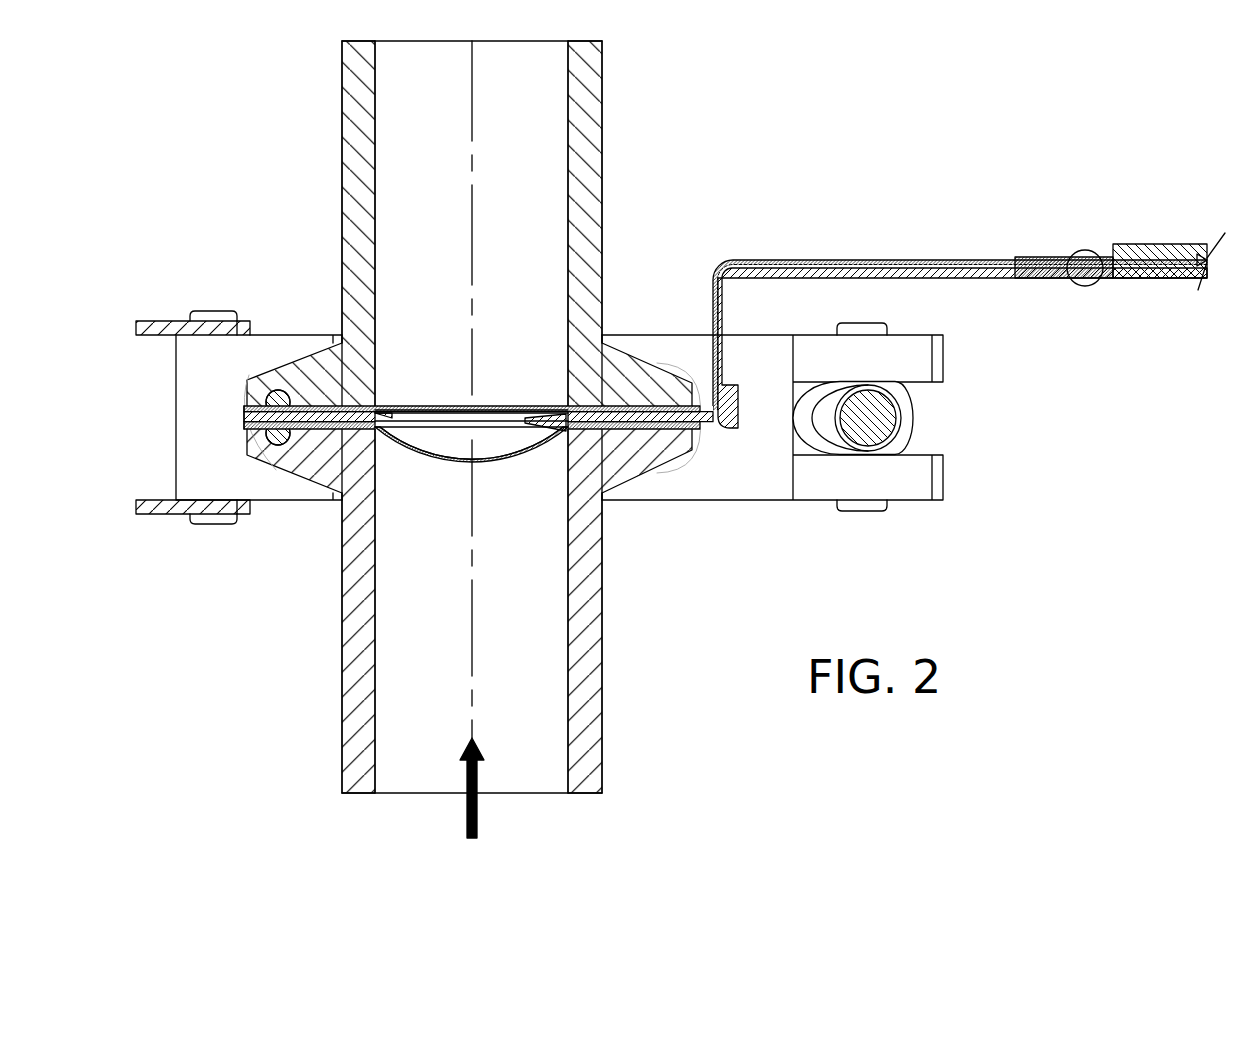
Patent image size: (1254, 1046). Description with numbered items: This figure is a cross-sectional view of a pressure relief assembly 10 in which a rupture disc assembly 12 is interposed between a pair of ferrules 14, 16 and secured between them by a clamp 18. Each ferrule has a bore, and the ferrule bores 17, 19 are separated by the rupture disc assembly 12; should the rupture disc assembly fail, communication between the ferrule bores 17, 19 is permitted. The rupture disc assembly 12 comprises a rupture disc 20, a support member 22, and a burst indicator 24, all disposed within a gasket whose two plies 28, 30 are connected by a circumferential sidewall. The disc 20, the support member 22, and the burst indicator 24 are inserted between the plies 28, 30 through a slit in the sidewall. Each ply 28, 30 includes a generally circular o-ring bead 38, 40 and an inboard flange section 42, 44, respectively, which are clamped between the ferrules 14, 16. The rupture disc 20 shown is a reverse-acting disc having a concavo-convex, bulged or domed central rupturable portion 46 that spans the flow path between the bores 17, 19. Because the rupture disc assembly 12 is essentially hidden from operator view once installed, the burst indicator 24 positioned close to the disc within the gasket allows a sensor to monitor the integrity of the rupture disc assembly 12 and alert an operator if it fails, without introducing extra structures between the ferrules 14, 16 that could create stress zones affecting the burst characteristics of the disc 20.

The pressure relief assembly 10 is at (242, 192).
The rupture disc assembly 12 is at (486, 394).
The ferrule 14 is at (593, 700).
The ferrule 16 is at (602, 130).
The ferrule bore 17 is at (496, 707).
The clamp 18 is at (667, 500).
The ferrule bore 19 is at (526, 99).
The rupture disc 20 is at (376, 433).
The support member 22 is at (570, 406).
The burst indicator 24 is at (452, 408).
The ply 28 is at (568, 443).
The ply 30 is at (297, 400).
The o-ring bead 38 is at (270, 434).
The o-ring bead 40 is at (270, 400).
The inboard flange section 42 is at (345, 440).
The inboard flange section 44 is at (343, 392).
The central rupturable portion 46 is at (483, 460).